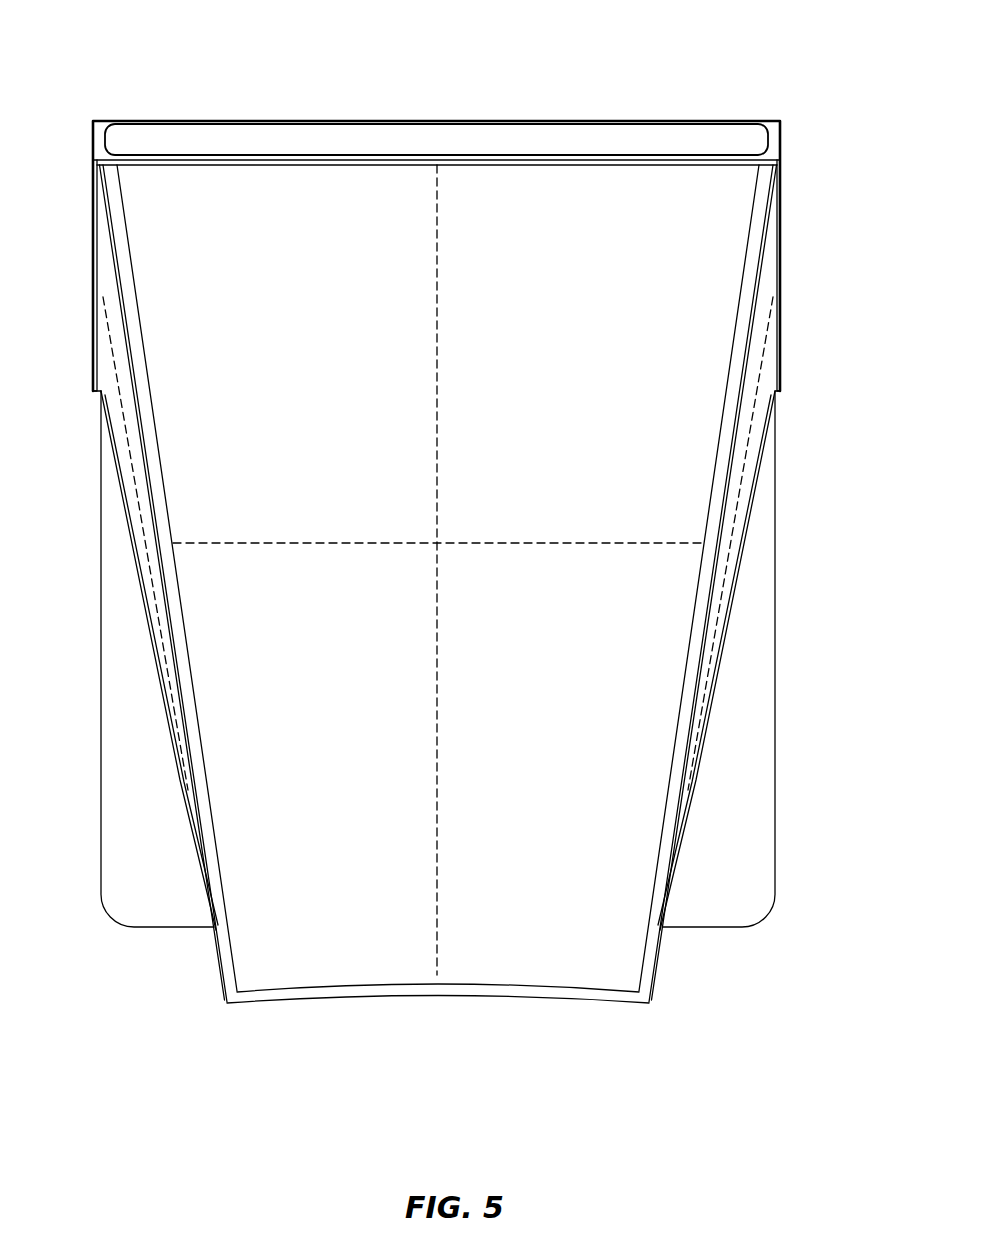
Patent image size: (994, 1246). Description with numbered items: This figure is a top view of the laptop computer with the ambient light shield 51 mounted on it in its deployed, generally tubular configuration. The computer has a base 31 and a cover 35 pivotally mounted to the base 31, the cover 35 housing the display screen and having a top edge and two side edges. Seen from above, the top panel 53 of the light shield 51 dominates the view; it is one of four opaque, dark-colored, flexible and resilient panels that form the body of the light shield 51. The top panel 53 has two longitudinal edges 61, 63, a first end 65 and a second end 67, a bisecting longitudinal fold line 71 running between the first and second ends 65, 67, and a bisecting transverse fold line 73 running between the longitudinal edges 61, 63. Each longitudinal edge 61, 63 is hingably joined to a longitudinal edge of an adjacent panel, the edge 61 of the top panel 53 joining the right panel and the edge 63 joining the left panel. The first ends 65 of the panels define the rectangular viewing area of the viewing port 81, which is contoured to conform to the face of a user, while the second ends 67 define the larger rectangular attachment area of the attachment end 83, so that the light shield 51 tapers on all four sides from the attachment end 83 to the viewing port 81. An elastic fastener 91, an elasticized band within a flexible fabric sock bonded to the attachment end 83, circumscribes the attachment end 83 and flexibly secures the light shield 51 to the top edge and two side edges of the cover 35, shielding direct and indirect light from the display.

The base 31 is at (132, 928).
The cover 35 is at (545, 128).
The light shield 51 is at (795, 84).
The top panel 53 is at (588, 733).
The longitudinal edge 61 is at (662, 957).
The longitudinal edge 63 is at (193, 833).
The first end 65 is at (342, 999).
The second end 67 is at (307, 164).
The longitudinal fold line 71 is at (437, 328).
The transverse fold line 73 is at (542, 543).
The viewing port 81 is at (438, 1028).
The attachment end 83 is at (436, 108).
The elastic fastener 91 is at (772, 165).